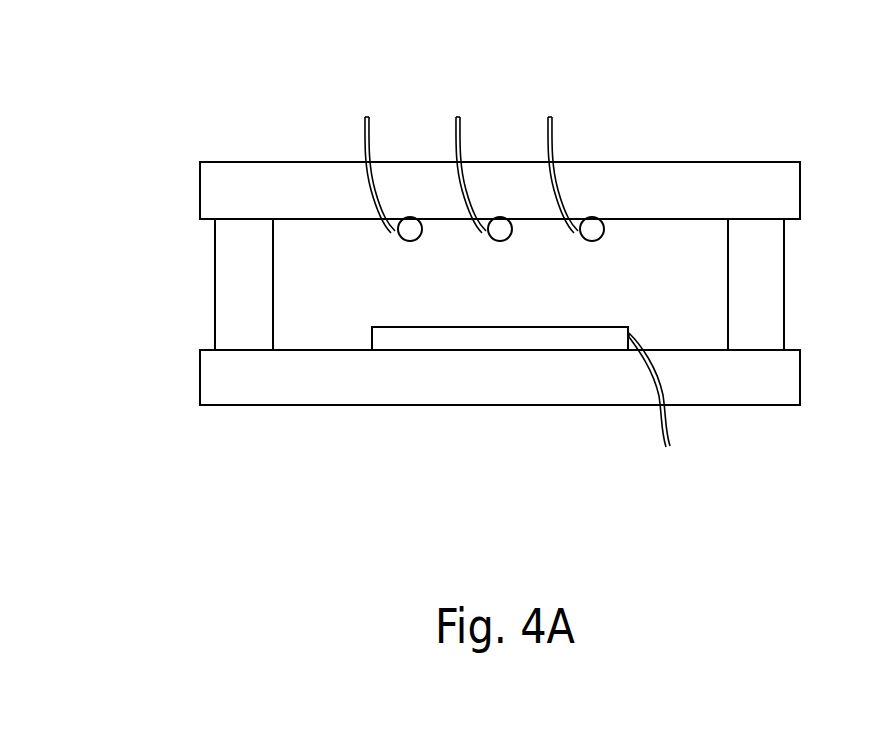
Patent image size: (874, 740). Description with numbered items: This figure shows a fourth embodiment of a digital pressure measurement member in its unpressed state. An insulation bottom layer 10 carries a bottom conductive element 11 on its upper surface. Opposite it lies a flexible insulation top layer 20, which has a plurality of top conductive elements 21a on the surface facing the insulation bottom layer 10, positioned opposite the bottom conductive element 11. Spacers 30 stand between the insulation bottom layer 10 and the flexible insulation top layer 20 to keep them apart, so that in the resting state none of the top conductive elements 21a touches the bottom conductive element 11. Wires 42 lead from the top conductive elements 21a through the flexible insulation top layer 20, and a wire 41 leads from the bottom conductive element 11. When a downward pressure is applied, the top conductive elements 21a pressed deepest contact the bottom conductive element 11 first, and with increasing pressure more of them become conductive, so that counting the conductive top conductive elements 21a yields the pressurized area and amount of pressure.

The insulation bottom layer 10 is at (565, 378).
The bottom conductive element 11 is at (443, 338).
The flexible insulation top layer 20 is at (643, 187).
The top conductive elements 21a is at (504, 219).
The spacer 30 is at (227, 279).
The conductive wire 41 is at (663, 433).
The conductive wire 42 is at (362, 138).